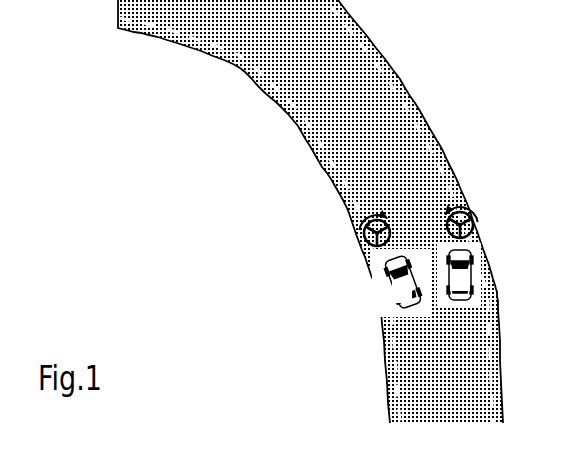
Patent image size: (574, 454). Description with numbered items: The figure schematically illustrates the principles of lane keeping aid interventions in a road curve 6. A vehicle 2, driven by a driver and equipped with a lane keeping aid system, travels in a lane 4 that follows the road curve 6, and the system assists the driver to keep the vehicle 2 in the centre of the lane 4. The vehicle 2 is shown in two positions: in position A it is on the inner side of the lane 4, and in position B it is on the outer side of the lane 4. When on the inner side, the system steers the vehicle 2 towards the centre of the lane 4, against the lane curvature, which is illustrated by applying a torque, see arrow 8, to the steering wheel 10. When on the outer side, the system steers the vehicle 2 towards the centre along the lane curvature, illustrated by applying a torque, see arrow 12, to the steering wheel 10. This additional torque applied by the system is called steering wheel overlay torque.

The vehicle 2 is at (447, 304).
The lane 4 is at (310, 211).
The road curve 6 is at (291, 172).
The arrow 8 is at (367, 220).
The steering wheel 10 is at (420, 223).
The arrow 12 is at (462, 210).